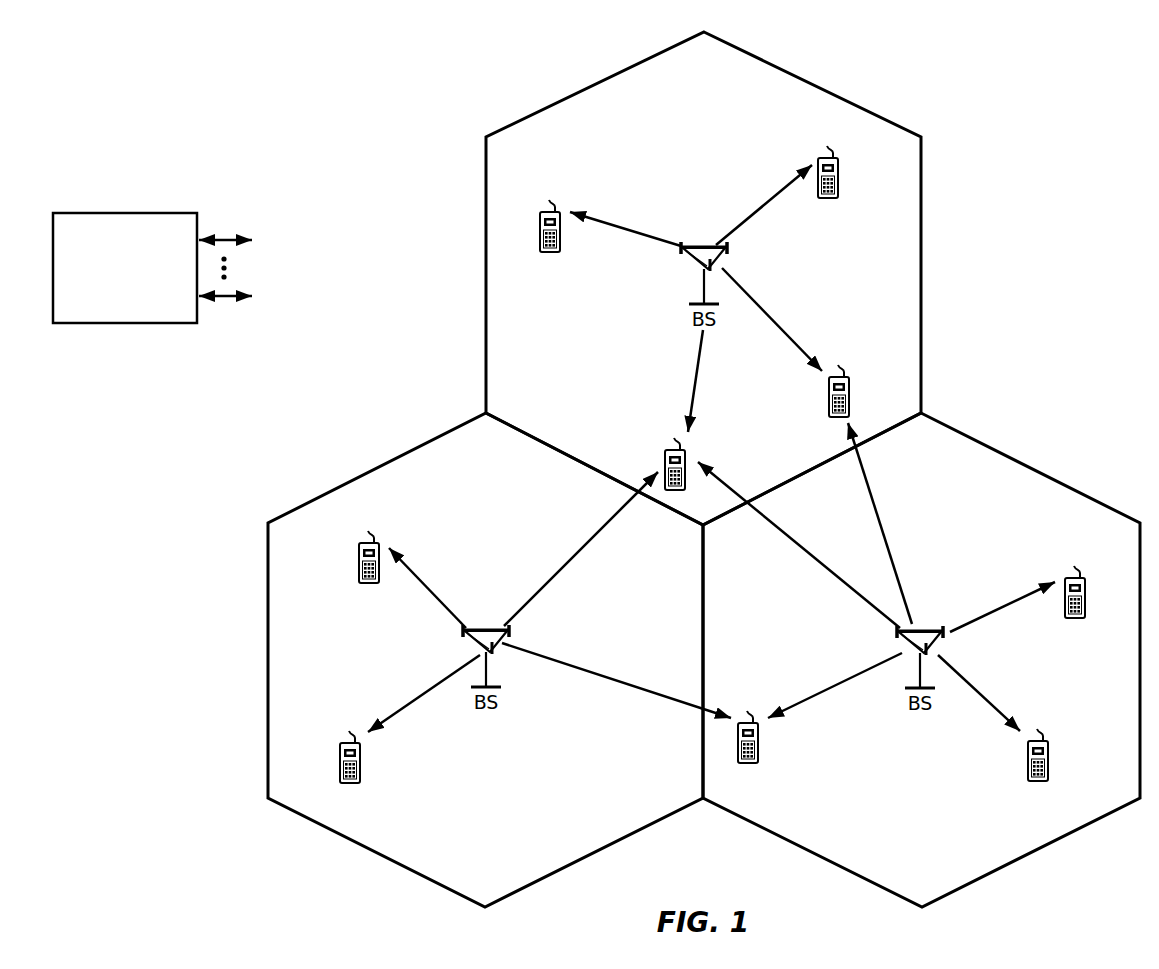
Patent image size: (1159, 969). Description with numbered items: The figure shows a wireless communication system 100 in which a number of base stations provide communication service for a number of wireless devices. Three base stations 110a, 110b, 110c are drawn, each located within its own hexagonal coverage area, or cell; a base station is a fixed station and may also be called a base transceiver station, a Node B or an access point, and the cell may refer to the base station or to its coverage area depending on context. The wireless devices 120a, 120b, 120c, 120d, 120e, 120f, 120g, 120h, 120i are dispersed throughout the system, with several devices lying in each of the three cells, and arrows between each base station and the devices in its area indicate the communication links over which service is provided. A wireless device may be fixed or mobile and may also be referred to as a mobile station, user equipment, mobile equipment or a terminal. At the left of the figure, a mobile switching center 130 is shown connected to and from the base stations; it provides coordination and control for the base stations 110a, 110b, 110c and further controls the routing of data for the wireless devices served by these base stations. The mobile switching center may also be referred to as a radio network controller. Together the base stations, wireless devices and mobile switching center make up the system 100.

The wireless communication system 100 is at (1066, 65).
The base station 110a is at (702, 246).
The base station 110b is at (484, 629).
The base station 110c is at (928, 630).
The wireless device 120a is at (839, 161).
The wireless device 120b is at (543, 214).
The wireless device 120c is at (660, 451).
The wireless device 120d is at (851, 378).
The wireless device 120e is at (362, 544).
The wireless device 120f is at (343, 744).
The wireless device 120g is at (753, 726).
The wireless device 120h is at (1049, 743).
The wireless device 120i is at (1085, 581).
The mobile switching center 130 is at (120, 213).